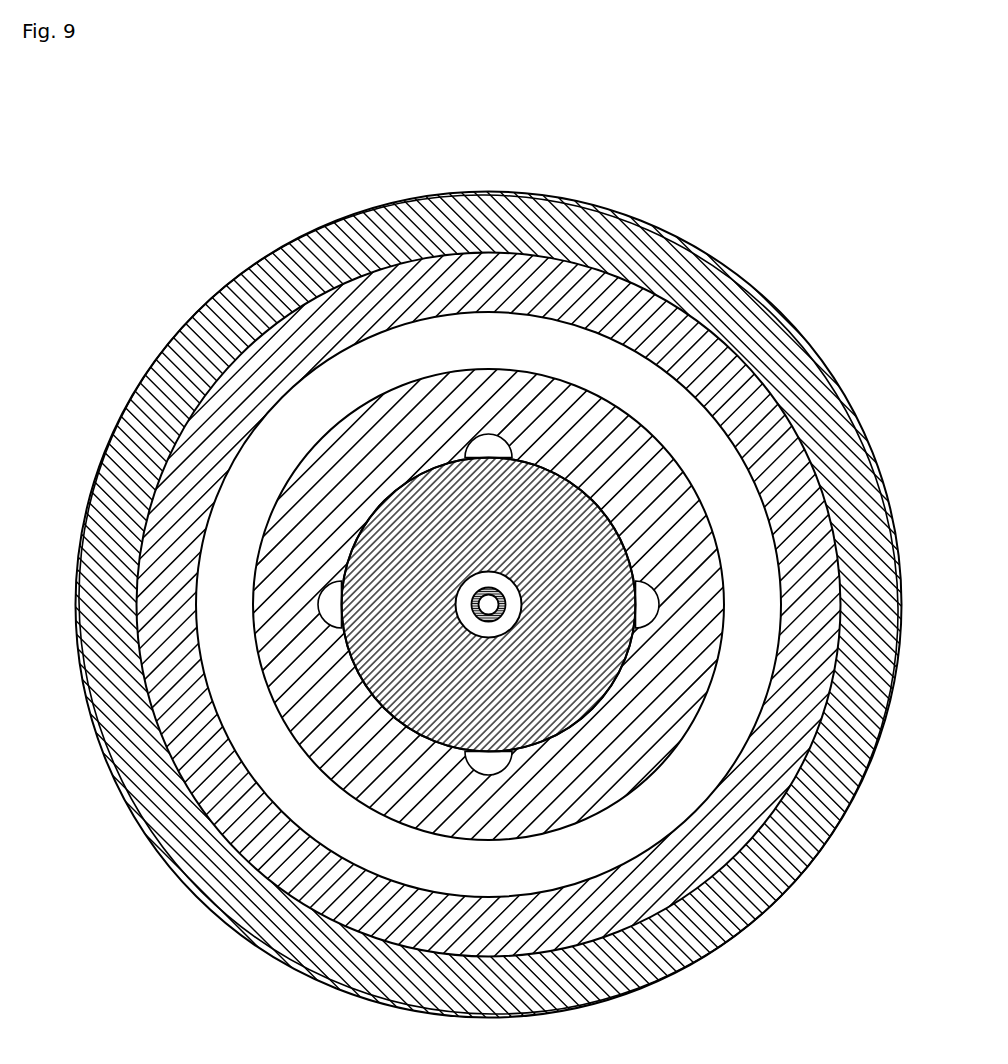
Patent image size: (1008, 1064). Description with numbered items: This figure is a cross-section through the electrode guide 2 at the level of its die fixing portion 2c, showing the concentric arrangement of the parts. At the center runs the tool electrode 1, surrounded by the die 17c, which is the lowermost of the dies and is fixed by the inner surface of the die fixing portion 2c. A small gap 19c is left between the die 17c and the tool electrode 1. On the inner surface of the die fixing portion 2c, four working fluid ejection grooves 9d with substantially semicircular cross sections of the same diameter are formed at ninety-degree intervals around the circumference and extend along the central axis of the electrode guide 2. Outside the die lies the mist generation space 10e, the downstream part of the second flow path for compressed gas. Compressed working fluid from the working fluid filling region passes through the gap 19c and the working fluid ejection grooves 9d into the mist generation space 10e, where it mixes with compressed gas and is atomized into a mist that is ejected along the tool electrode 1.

The electrode guide 2 is at (705, 153).
The die fixing portion 2c is at (777, 306).
The mist generation space 10e is at (727, 470).
The die 17c is at (600, 703).
The working fluid ejection grooves 9d is at (488, 440).
The tool electrode 1 is at (460, 588).
The gap 19c is at (473, 591).